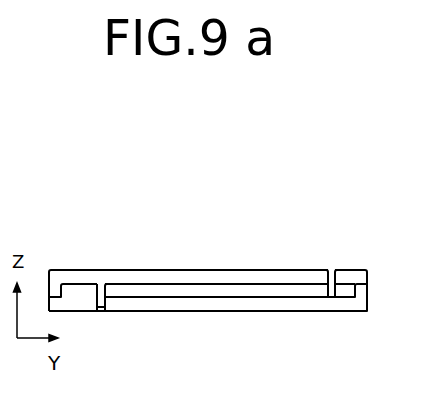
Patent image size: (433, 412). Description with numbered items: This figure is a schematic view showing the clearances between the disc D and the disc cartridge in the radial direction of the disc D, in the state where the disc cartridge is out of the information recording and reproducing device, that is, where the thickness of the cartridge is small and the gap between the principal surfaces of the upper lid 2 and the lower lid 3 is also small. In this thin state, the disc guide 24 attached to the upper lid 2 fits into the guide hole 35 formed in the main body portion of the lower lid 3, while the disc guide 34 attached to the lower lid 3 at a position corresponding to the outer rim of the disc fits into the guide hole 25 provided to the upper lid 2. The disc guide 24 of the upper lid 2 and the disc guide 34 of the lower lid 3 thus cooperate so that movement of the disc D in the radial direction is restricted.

The upper lid 2 is at (70, 270).
The disc guide 24 is at (103, 286).
The guide hole 35 is at (98, 309).
The disc D is at (212, 288).
The disc guide 34 is at (332, 288).
The guide hole 25 is at (332, 276).
The lower lid 3 is at (360, 312).